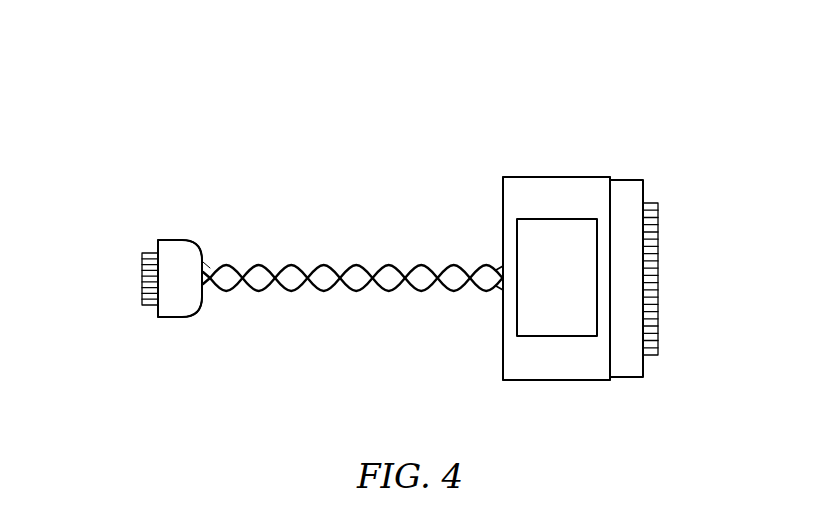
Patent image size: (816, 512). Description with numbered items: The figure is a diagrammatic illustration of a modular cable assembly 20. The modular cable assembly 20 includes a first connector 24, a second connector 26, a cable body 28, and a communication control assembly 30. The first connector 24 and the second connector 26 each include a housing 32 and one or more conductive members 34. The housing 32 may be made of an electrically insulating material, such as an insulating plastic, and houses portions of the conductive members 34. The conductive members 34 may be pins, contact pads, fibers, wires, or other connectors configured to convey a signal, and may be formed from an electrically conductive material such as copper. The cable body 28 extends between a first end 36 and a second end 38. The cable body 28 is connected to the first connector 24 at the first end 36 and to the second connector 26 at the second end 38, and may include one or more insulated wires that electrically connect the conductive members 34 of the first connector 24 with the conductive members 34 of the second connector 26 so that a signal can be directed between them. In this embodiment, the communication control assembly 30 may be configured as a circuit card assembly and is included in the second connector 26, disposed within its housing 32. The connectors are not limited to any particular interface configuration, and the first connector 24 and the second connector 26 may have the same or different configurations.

The modular cable assembly 20 is at (632, 103).
The first connector 24 is at (177, 327).
The second connector 26 is at (629, 397).
The cable body 28 is at (347, 266).
The communication control assembly 30 is at (541, 339).
The housing 32 is at (172, 247).
The conductive members 34 is at (142, 275).
The first end 36 is at (204, 261).
The second end 38 is at (501, 265).